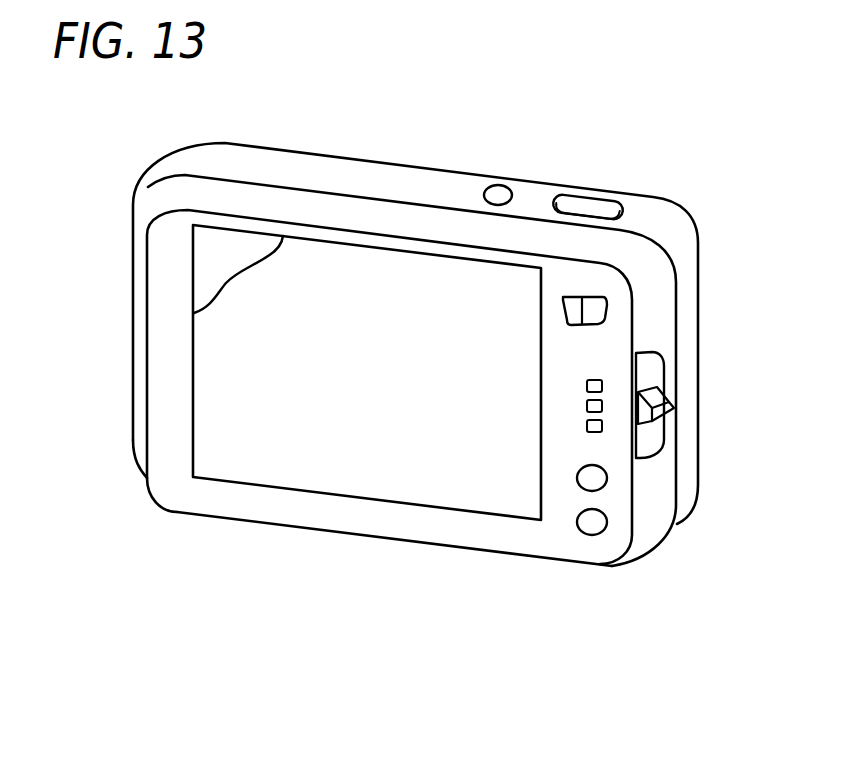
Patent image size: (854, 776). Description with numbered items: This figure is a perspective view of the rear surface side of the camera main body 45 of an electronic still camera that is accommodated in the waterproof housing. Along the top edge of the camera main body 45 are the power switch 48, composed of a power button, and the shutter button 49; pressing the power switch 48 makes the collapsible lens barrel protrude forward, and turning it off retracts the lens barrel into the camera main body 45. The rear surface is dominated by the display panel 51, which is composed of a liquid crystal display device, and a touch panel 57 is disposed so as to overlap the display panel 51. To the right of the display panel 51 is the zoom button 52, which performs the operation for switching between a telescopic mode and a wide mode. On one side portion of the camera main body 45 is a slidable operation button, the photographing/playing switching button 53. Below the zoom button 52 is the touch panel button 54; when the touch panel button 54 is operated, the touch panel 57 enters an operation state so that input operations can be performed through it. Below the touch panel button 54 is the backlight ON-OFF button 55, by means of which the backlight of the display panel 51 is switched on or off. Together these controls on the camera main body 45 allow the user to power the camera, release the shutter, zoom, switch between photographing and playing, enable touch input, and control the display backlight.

The camera main body 45 is at (185, 491).
The power switch 48 is at (500, 192).
The shutter button 49 is at (593, 198).
The display panel 51 is at (217, 380).
The zoom button 52 is at (600, 312).
The photographing/playing switching button 53 is at (673, 409).
The touch panel button 54 is at (598, 483).
The backlight ON-OFF button 55 is at (593, 522).
The touch panel 57 is at (209, 272).